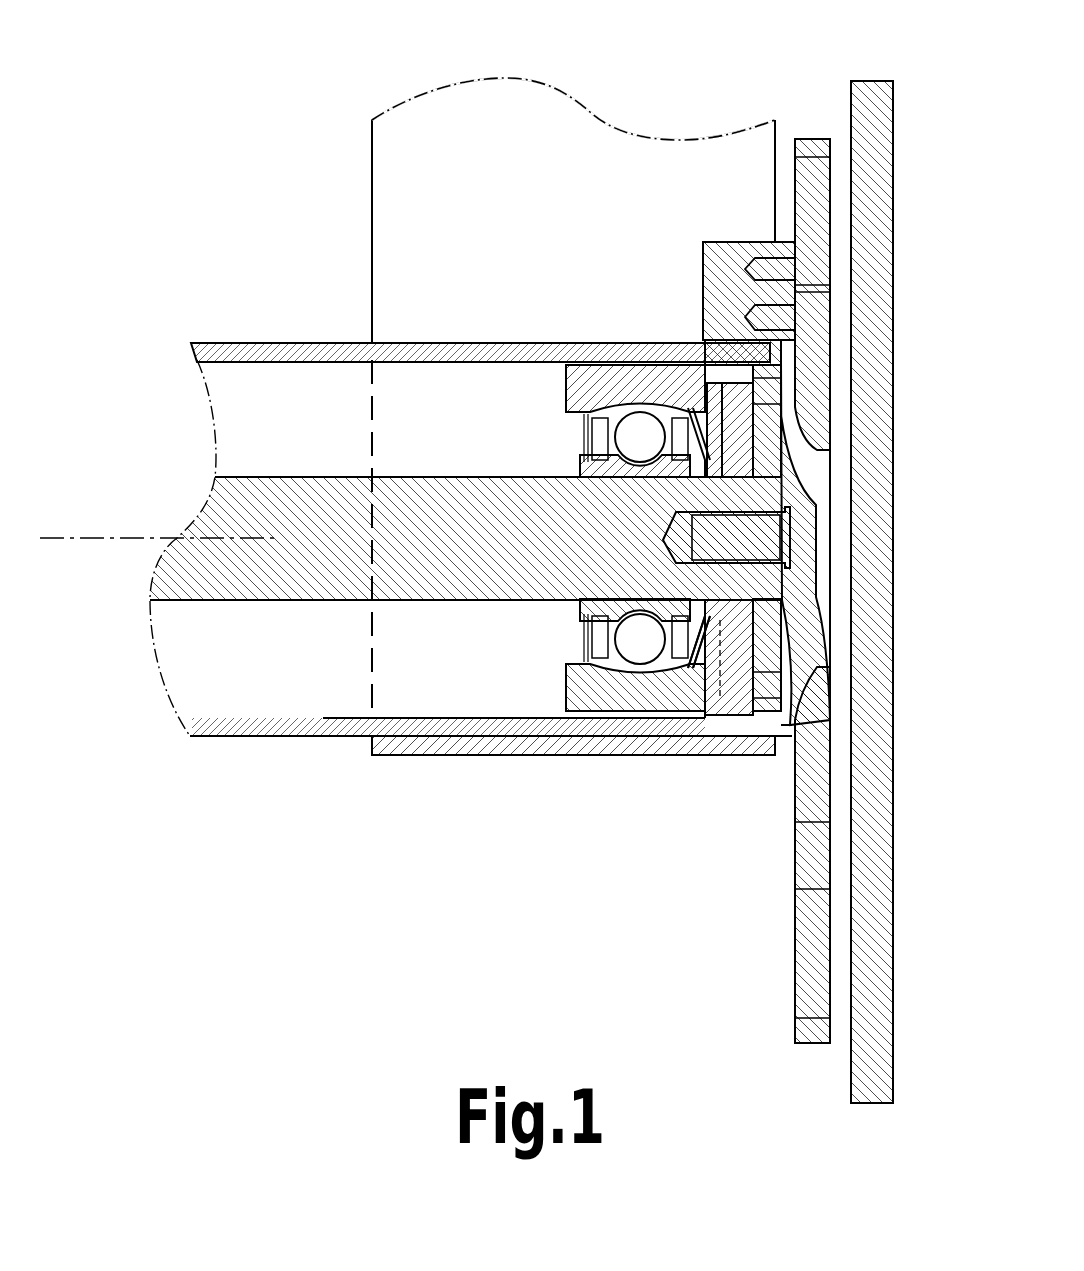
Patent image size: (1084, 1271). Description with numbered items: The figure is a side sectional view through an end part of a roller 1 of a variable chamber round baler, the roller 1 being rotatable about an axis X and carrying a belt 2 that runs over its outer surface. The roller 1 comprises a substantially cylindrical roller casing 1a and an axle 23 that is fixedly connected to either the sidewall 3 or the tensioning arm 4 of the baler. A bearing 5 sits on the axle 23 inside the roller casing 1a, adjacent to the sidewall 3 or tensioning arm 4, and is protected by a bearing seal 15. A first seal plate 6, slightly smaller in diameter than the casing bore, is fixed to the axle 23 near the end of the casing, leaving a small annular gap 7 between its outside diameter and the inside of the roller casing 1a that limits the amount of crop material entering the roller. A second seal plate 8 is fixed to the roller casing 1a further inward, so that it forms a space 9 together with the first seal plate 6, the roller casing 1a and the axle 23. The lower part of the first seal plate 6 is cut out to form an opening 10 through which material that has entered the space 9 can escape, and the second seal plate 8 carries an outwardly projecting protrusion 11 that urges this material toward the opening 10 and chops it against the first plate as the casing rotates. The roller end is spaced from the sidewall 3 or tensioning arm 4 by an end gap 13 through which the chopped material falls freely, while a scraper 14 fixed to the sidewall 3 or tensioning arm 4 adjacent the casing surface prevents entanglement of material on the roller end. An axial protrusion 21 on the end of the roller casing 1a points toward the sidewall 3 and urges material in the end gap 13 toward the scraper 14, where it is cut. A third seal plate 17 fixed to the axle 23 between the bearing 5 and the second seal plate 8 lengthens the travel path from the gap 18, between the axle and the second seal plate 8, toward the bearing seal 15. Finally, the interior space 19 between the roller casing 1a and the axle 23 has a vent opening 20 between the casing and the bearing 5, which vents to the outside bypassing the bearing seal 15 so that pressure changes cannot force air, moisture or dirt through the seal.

The roller 1 is at (274, 763).
The roller casing 1a is at (350, 345).
The belt 2 is at (415, 275).
The sidewall 3 is at (872, 150).
The tensioning arm 4 is at (808, 793).
The bearing 5 is at (632, 435).
The first seal plate 6 is at (770, 420).
The annular gap 7 is at (722, 383).
The second seal plate 8 is at (713, 410).
The space 9 is at (737, 412).
The opening 10 is at (768, 667).
The protrusion 11 is at (737, 660).
The end gap 13 is at (783, 748).
The scraper 14 is at (740, 258).
The bearing seal 15 is at (675, 445).
The third seal plate 17 is at (680, 673).
The gap 18 is at (702, 650).
The space 19 is at (305, 393).
The vent opening 20 is at (650, 360).
The protrusion 21 is at (784, 725).
The axle 23 is at (243, 545).
The axis X is at (120, 530).